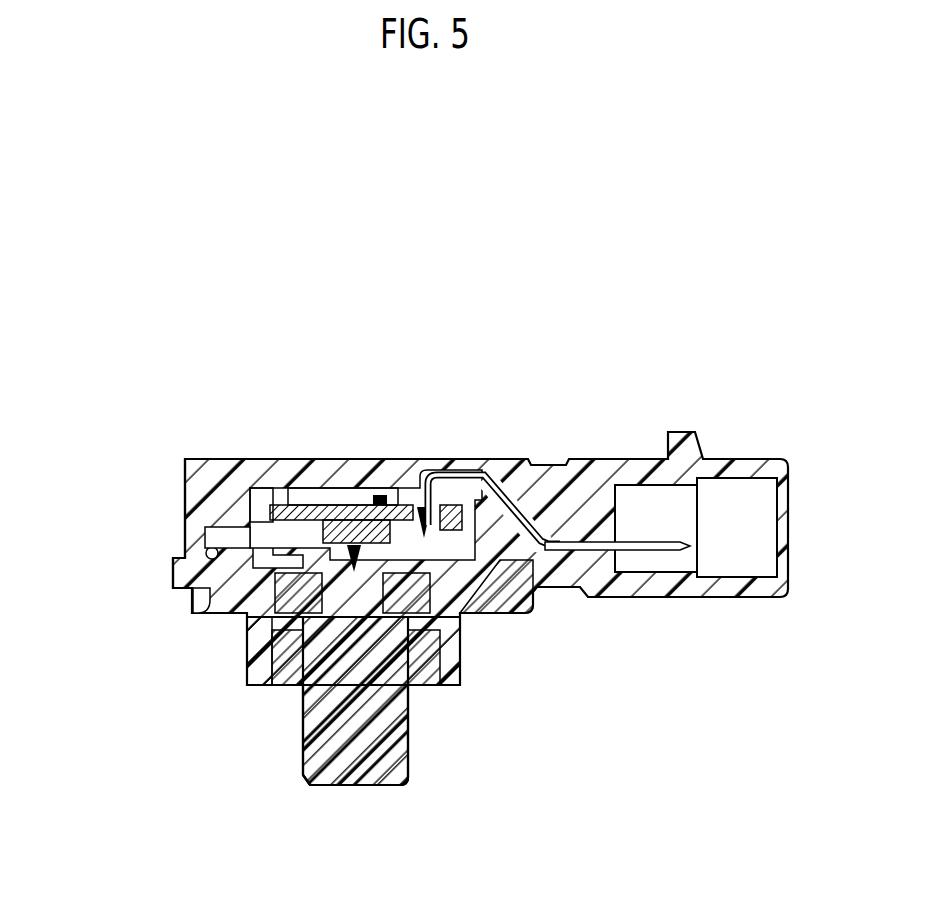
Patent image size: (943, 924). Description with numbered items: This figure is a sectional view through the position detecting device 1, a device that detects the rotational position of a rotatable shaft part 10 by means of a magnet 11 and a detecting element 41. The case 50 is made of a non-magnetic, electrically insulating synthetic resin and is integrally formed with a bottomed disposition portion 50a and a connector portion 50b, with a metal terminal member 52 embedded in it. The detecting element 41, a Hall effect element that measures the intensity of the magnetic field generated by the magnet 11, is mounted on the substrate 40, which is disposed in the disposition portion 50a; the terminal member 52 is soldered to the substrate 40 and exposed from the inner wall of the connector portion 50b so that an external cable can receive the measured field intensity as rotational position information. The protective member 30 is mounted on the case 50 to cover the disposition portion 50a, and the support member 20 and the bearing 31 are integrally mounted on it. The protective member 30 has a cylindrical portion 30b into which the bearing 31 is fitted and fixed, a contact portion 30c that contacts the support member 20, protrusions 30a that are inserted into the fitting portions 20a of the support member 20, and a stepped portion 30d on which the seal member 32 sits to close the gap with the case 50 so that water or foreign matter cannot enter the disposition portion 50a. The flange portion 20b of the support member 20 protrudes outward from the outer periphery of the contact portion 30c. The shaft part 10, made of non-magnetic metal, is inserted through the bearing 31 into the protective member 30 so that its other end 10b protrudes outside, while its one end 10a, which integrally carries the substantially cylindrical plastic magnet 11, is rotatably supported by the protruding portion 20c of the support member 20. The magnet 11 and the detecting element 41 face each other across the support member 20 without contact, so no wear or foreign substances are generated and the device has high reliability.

The position detecting device 1 is at (236, 237).
The shaft part 10 is at (292, 795).
The one end of the shaft part 10a is at (457, 632).
The other end of the shaft part 10b is at (350, 777).
The magnet 11 is at (250, 642).
The support member 20 is at (440, 452).
The fitting portions 20a is at (262, 540).
The flange portion 20b is at (517, 453).
The protruding portion 20c is at (352, 600).
The protective member 30 is at (468, 692).
The protrusions 30a is at (188, 498).
The cylindrical portion 30b is at (253, 667).
The contact portion 30c is at (498, 618).
The stepped portion 30d is at (193, 592).
The bearing 31 is at (288, 683).
The seal member 32 is at (177, 555).
The substrate 40 is at (365, 505).
The detecting element 41 is at (333, 488).
The case 50 is at (160, 472).
The disposition portion 50a is at (317, 492).
The connector portion 50b is at (755, 460).
The terminal member 52 is at (690, 568).